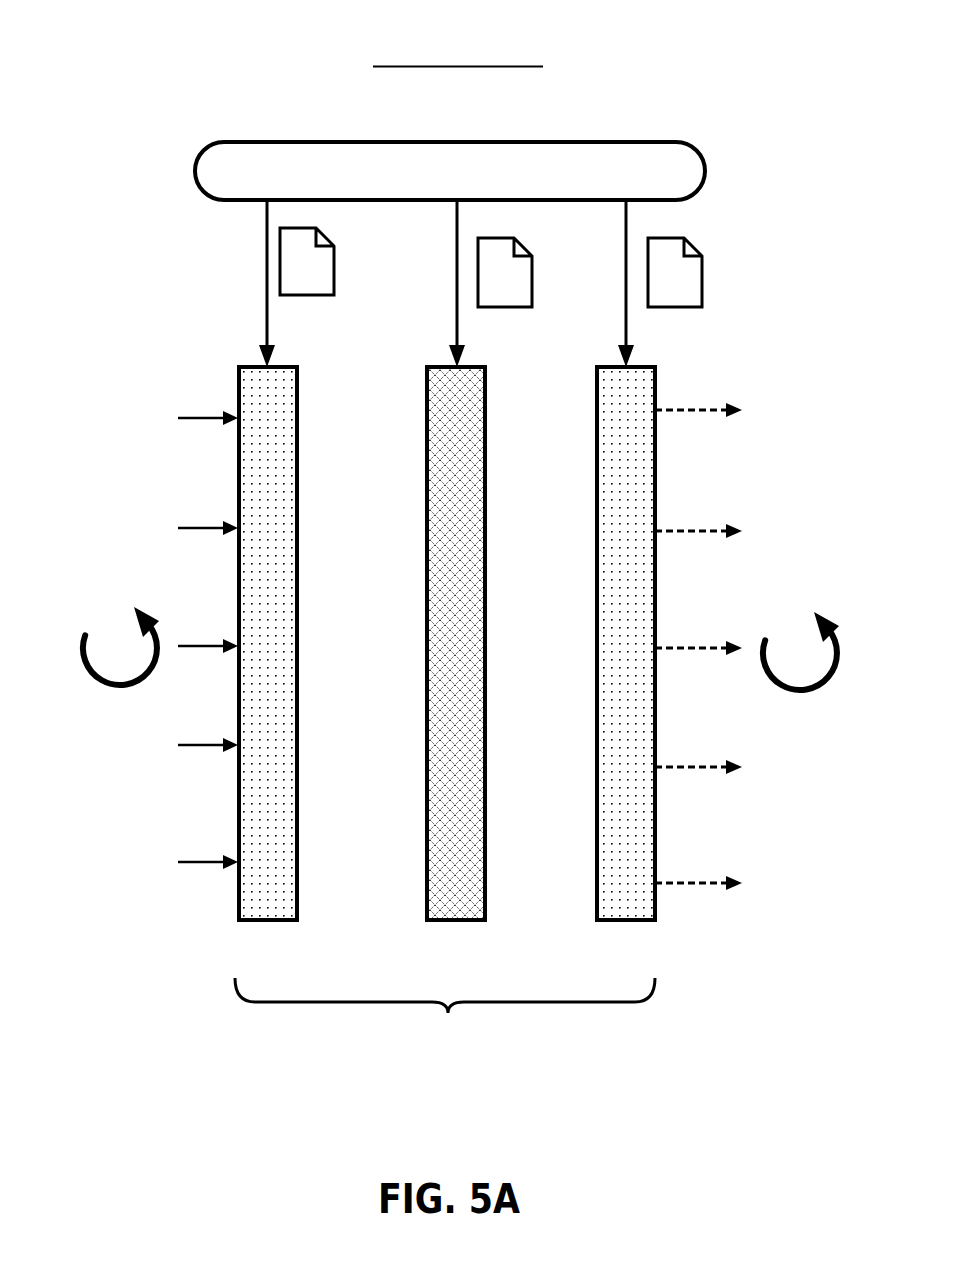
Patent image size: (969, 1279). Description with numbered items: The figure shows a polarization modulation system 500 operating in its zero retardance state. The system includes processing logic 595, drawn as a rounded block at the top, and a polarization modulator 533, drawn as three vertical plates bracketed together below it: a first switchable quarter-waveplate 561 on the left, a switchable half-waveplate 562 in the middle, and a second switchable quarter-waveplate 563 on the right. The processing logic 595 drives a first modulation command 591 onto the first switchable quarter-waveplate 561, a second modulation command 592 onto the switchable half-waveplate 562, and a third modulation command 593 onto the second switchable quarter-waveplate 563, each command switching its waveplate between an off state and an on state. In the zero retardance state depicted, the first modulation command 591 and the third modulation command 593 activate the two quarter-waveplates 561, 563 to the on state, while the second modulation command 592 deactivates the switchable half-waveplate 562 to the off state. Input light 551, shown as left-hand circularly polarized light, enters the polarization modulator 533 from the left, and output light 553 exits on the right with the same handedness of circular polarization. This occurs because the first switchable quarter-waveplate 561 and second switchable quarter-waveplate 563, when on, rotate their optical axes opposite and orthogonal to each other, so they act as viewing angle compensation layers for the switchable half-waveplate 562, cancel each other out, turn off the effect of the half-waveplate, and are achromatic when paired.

The polarization modulation system 500 is at (837, 62).
The processing logic 595 is at (505, 183).
The first modulation command 591 is at (334, 295).
The second modulation command 592 is at (532, 307).
The third modulation command 593 is at (702, 307).
The input light 551 is at (157, 626).
The output light 553 is at (747, 634).
The first switchable quarter-waveplate 561 is at (263, 921).
The switchable half-waveplate 562 is at (451, 921).
The second switchable quarter-waveplate 563 is at (621, 921).
The polarization modulator 533 is at (445, 1014).